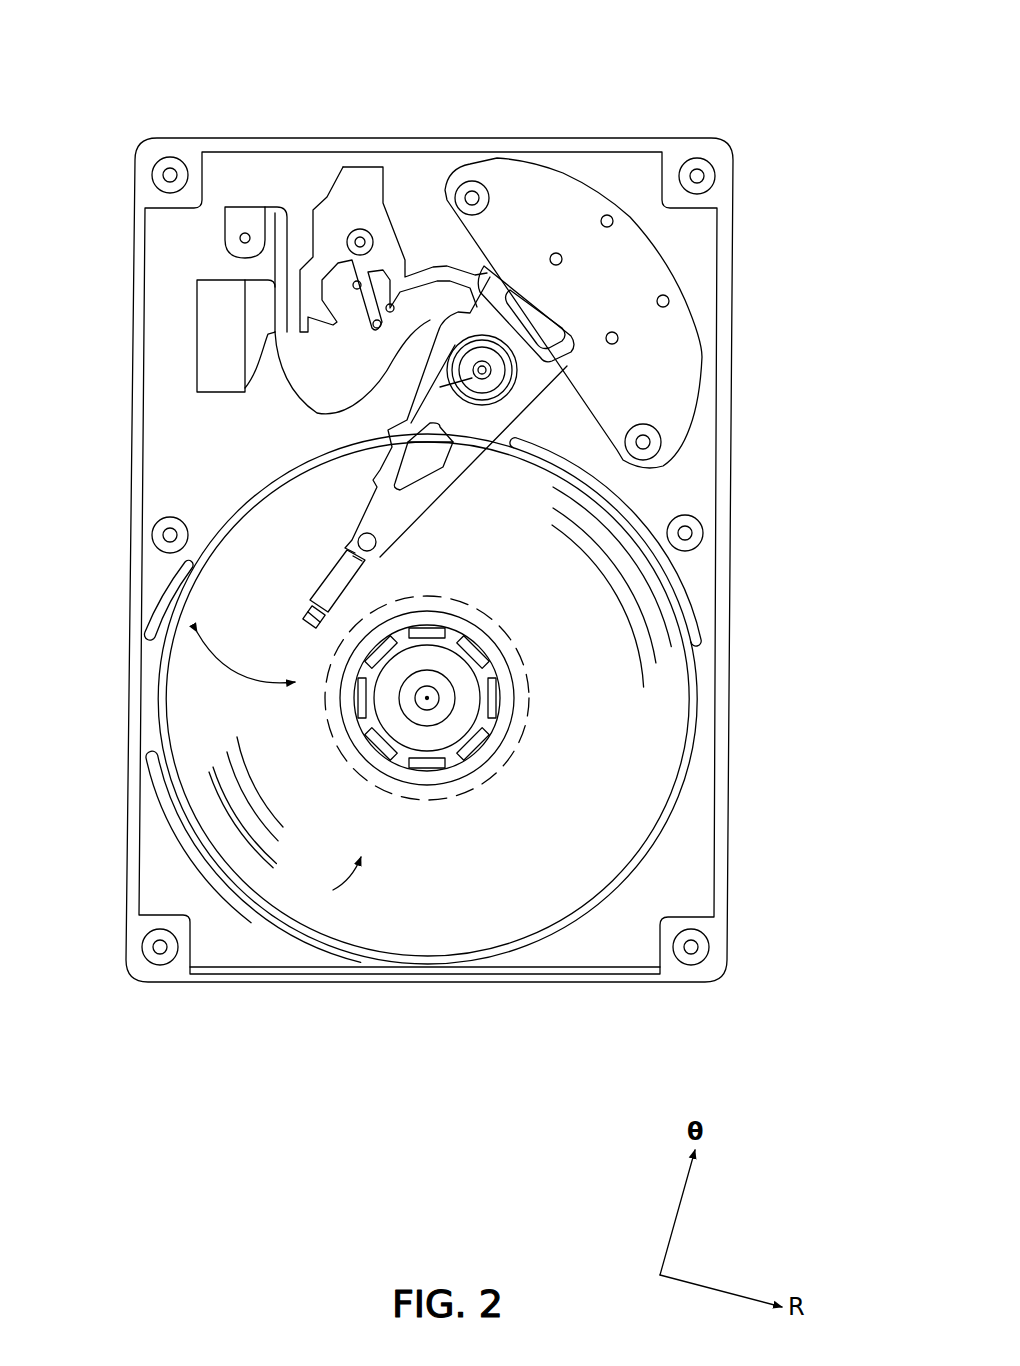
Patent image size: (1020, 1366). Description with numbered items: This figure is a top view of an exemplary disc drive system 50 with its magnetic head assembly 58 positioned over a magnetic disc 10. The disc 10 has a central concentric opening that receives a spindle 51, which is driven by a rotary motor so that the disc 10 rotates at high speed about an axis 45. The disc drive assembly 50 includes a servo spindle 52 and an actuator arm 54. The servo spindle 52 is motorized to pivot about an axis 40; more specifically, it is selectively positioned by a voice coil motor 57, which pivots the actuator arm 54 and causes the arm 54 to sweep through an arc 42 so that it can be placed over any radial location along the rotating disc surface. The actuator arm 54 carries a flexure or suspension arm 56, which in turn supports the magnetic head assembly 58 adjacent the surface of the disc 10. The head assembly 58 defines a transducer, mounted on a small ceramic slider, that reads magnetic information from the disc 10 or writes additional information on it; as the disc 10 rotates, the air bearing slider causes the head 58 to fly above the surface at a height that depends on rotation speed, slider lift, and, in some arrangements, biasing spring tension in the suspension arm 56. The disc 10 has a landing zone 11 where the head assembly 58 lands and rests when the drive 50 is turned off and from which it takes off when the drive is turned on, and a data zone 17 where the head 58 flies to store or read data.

The disc drive system 50 is at (298, 62).
The voice coil motor 57 is at (530, 193).
The axis 40 is at (486, 370).
The servo spindle 52 is at (407, 422).
The actuator arm 54 is at (460, 428).
The suspension arm 56 is at (338, 573).
The magnetic head assembly 58 is at (314, 606).
The magnetic disc 10 is at (650, 742).
The axis of rotation 45 is at (427, 698).
The landing zone 11 is at (362, 772).
The spindle 51 is at (427, 704).
The arc 42 is at (244, 665).
The data zone 17 is at (333, 890).